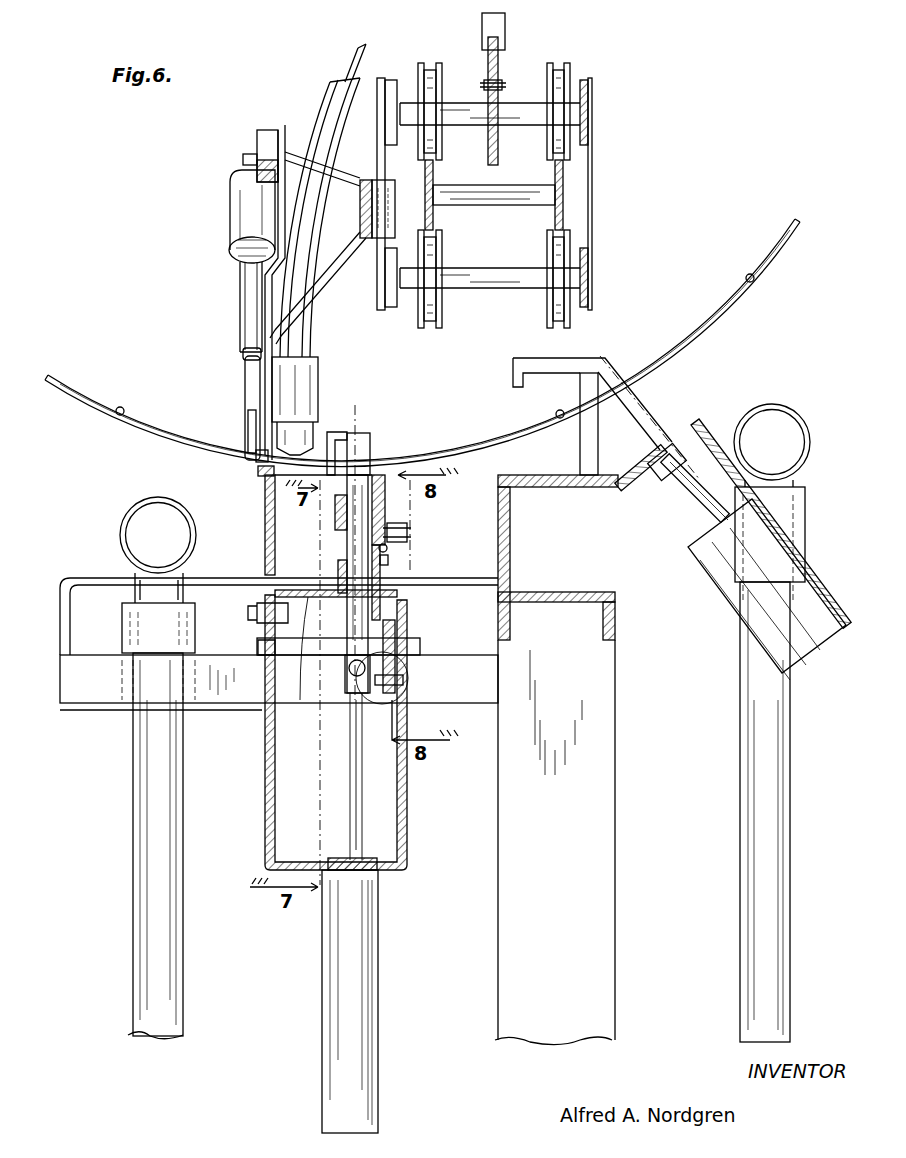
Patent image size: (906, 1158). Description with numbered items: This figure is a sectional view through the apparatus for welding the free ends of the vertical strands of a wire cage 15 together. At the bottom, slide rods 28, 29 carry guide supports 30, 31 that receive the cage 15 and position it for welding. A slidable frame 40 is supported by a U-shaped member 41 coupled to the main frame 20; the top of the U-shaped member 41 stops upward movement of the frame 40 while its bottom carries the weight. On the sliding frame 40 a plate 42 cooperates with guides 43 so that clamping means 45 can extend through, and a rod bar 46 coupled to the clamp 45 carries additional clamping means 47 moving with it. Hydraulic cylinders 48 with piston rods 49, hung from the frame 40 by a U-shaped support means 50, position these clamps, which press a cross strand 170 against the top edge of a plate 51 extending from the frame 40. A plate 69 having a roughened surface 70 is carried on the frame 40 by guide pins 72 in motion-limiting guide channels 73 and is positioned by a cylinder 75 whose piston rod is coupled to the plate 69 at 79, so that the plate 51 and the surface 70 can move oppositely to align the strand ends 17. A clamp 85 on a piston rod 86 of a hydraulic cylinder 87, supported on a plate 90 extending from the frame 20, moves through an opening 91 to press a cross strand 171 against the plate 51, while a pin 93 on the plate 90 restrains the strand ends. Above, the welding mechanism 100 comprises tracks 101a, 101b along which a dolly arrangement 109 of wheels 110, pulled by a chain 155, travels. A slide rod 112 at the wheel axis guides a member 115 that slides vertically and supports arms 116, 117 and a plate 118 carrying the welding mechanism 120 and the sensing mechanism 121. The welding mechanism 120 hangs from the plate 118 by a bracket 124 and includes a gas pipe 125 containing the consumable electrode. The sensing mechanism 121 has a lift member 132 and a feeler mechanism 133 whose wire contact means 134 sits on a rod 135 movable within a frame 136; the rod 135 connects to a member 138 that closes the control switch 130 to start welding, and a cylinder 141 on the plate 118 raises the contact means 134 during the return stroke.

The wire cage 15 is at (778, 250).
The vertical strand free ends 17 is at (238, 458).
The frame 20 is at (614, 762).
The slide rod 28 is at (134, 824).
The slide rod 29 is at (746, 787).
The guide support 30 is at (121, 534).
The guide support 31 is at (808, 430).
The slidable frame 40 is at (308, 597).
The U-shaped member 41 is at (95, 688).
The plate 42 is at (378, 570).
The guides 43 is at (337, 572).
The clamping means 45 is at (372, 460).
The rod bar 46 is at (336, 522).
The additional clamping means 47 is at (355, 547).
The hydraulic cylinders 48 is at (335, 968).
The piston rods 49 is at (352, 797).
The U-shaped support means 50 is at (406, 838).
The plate 51 is at (267, 507).
The plate 69 is at (390, 561).
The roughened surface 70 is at (412, 466).
The guide pins 72 is at (408, 530).
The motion-limiting guide channels 73 is at (388, 548).
The cylinder 75 is at (390, 700).
The coupling point 79 is at (408, 682).
The clamping means 85 is at (524, 373).
The piston rod 86 is at (692, 502).
The hydraulic cylinder 87 is at (738, 602).
The plate 90 is at (702, 432).
The opening 91 is at (667, 446).
The pin 93 is at (582, 456).
The welding mechanism 100 is at (611, 42).
The track 101a is at (434, 215).
The track 101b is at (556, 214).
The dolly arrangement 109 is at (598, 93).
The wheels 110 is at (436, 75).
The slide rod 112 is at (378, 148).
The member 115 is at (361, 206).
The arm 116 is at (296, 155).
The arm 117 is at (328, 255).
The plate 118 is at (264, 291).
The welding mechanism 120 is at (331, 341).
The sensing mechanism 121 is at (233, 378).
The bracket 124 is at (312, 376).
The gas pipe 125 is at (335, 100).
The control switch 130 is at (264, 132).
The lift member 132 is at (262, 472).
The feeler mechanism 133 is at (241, 411).
The wire contact means 134 is at (262, 456).
The rod 135 is at (246, 362).
The frame 136 is at (244, 318).
The member 138 is at (243, 159).
The cylinder 141 is at (238, 215).
The chain 155 is at (520, 80).
The cross strand 170 is at (372, 440).
The cross strand 171 is at (556, 413).